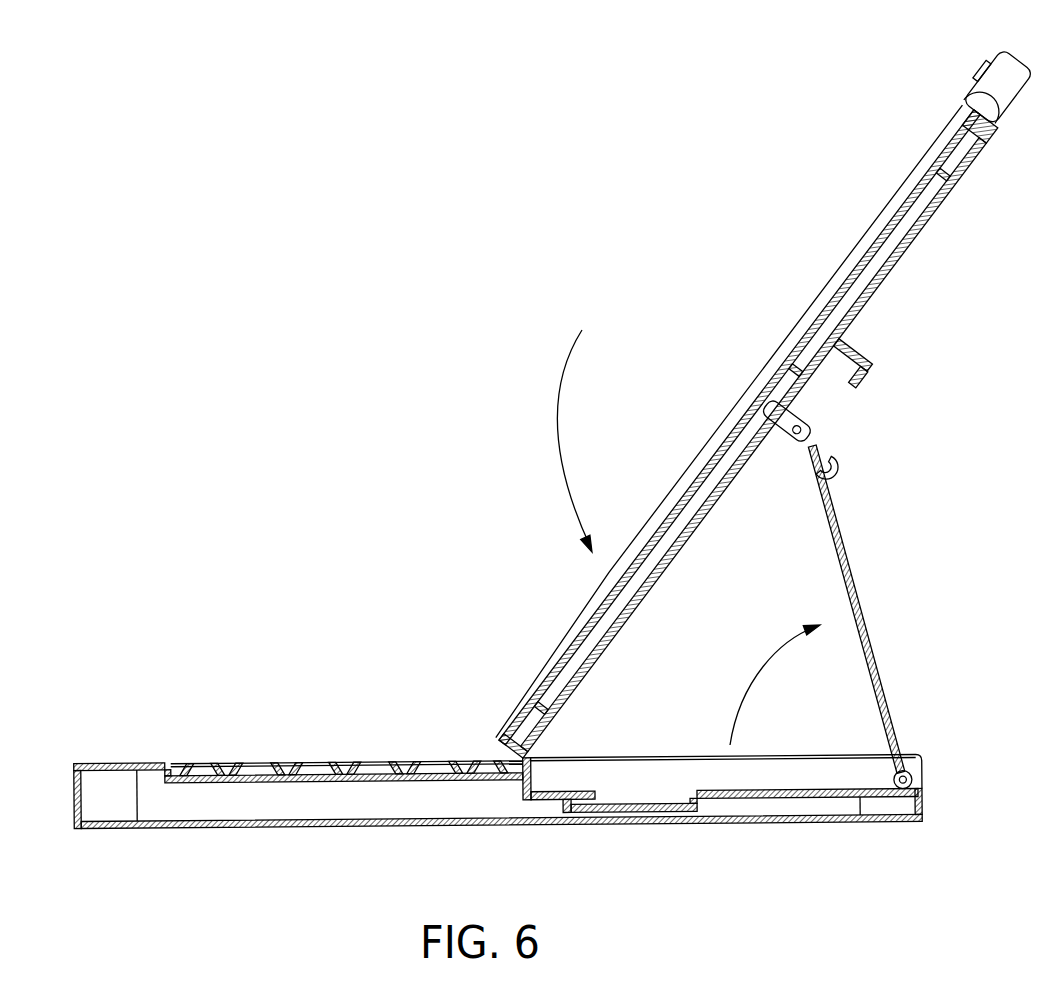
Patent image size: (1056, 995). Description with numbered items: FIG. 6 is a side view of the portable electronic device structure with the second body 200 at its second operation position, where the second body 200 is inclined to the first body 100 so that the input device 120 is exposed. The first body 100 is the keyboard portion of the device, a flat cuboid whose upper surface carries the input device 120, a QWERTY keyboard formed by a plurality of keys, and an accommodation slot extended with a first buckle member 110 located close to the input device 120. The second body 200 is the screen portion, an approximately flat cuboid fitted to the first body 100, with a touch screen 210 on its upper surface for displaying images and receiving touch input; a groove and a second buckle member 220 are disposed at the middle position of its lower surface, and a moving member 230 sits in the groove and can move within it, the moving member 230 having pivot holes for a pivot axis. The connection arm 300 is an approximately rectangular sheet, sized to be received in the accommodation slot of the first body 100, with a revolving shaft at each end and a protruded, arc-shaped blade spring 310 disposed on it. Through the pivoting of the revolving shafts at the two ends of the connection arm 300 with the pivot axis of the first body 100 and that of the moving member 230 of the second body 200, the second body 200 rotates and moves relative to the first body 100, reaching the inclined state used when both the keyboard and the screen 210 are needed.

The first body 100 is at (841, 824).
The first buckle member 110 is at (578, 802).
The input device 120 is at (310, 768).
The second body 200 is at (936, 130).
The screen 210 is at (568, 655).
The second buckle member 220 is at (866, 380).
The moving member 230 is at (787, 425).
The connection arm 300 is at (875, 632).
The blade spring 310 is at (840, 458).